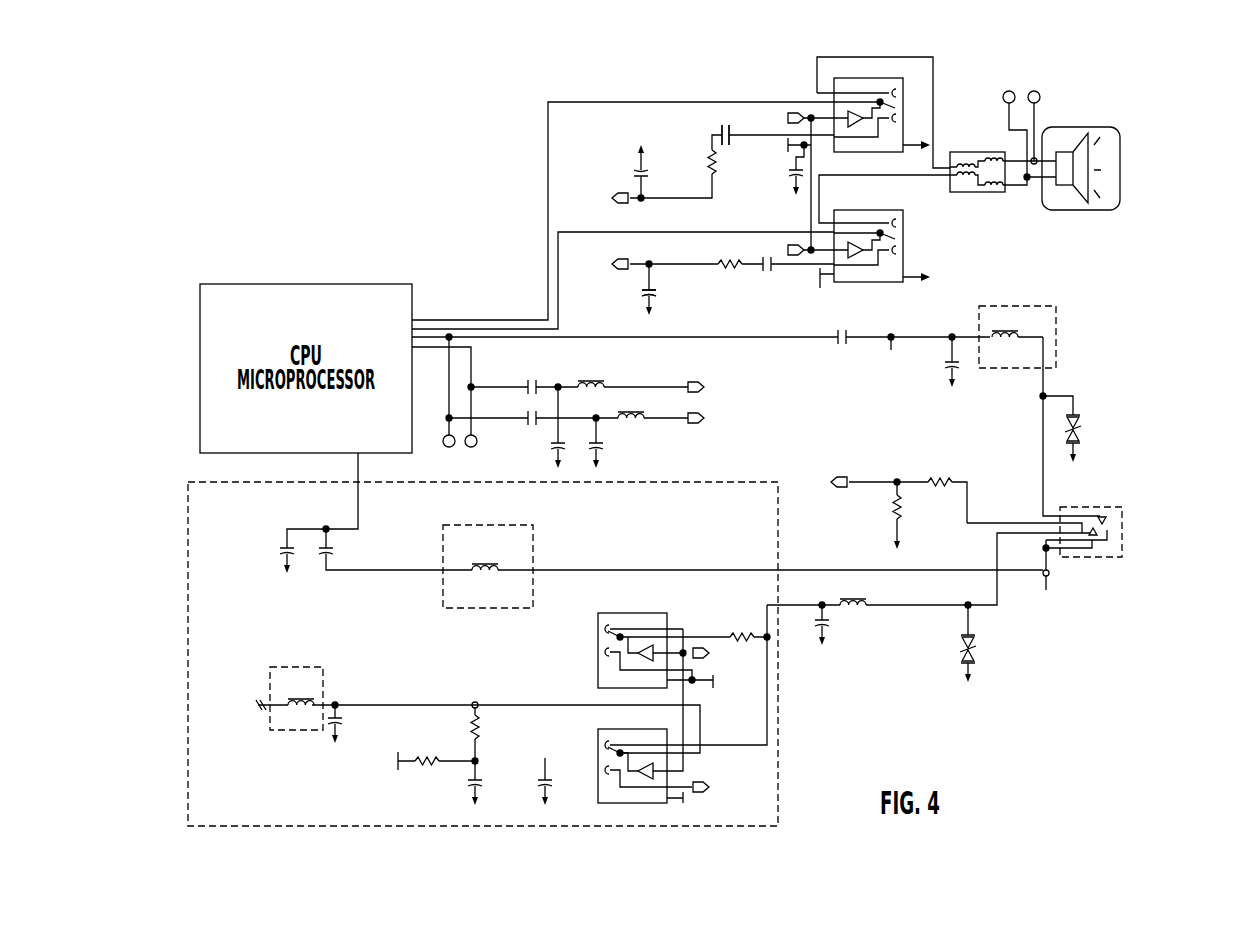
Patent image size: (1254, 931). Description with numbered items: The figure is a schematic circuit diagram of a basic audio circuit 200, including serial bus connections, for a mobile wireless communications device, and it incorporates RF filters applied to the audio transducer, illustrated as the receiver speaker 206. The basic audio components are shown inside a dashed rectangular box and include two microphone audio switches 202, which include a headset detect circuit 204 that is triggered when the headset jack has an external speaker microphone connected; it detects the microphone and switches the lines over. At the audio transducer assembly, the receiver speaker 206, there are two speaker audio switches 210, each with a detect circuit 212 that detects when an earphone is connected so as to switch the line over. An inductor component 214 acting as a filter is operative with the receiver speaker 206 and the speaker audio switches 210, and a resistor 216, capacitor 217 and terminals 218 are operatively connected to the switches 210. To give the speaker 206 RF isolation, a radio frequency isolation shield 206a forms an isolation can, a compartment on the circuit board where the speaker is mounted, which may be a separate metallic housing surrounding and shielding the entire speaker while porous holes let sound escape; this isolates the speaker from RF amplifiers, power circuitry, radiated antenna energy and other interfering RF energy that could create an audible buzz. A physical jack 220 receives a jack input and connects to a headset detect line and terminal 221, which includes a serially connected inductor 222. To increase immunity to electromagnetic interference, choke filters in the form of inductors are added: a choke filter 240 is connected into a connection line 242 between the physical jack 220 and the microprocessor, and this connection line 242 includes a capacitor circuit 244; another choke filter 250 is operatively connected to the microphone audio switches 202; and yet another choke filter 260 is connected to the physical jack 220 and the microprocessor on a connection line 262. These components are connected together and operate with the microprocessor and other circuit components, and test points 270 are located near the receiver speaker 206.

The audio circuit 200 is at (703, 90).
The microphone audio switches 202 is at (598, 645).
The headset detect circuit 204 is at (637, 650).
The receiver speaker 206 is at (1086, 136).
The radio frequency isolation shield 206a is at (1121, 176).
The speaker audio switches 210 is at (853, 78).
The detect circuit 212 is at (882, 101).
The inductor component 214 is at (990, 152).
The resistor 216 is at (714, 162).
The capacitor 217 is at (722, 130).
The terminals 218 is at (795, 111).
The physical jack 220 is at (1122, 532).
The headset detect line and terminal 221 is at (870, 485).
The inductor 222 is at (950, 482).
The choke filter 240 is at (467, 576).
The connection line 242 is at (655, 570).
The capacitor circuit 244 is at (308, 568).
The choke filter 250 is at (323, 676).
The choke filter 260 is at (1056, 330).
The connection line 262 is at (717, 337).
The test points 270 is at (1034, 91).